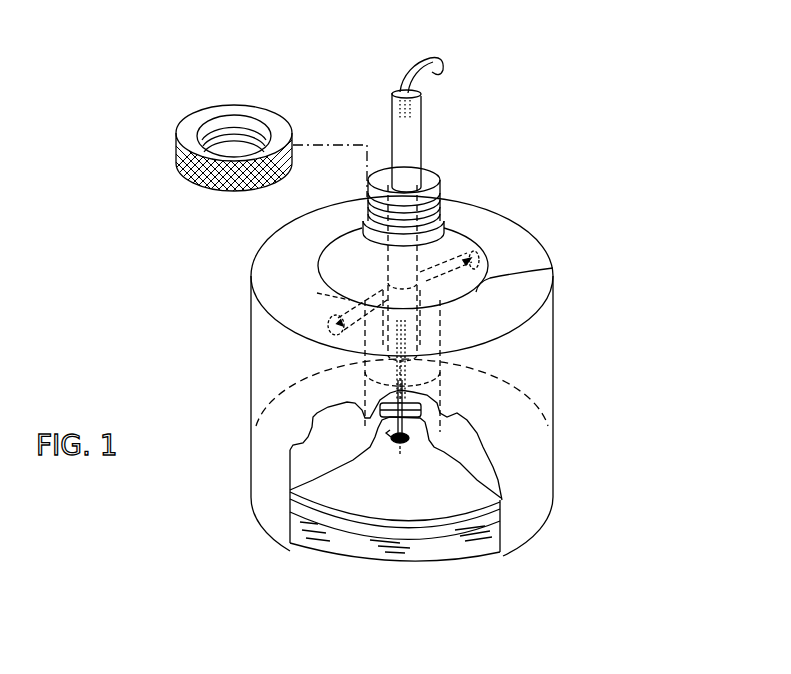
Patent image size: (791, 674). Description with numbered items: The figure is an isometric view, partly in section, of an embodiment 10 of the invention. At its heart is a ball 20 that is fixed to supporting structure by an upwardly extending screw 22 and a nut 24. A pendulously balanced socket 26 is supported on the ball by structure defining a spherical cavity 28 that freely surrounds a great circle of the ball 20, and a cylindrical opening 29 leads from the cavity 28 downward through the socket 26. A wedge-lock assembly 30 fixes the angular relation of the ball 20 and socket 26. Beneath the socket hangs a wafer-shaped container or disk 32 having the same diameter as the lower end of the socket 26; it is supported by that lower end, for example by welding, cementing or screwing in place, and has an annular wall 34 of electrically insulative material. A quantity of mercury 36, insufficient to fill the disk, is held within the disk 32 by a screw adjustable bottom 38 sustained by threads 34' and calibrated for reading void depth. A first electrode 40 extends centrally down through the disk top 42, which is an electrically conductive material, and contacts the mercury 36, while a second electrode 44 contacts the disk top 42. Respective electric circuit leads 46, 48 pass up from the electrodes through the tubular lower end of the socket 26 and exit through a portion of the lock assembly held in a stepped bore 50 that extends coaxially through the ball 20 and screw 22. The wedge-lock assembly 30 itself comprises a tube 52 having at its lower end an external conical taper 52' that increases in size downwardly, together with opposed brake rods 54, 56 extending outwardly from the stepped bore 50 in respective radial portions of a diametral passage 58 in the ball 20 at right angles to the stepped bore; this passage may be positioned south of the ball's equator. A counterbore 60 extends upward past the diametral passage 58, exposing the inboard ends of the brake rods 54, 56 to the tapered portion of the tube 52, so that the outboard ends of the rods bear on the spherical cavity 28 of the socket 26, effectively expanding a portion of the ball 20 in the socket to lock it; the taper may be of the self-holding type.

The embodiment 10 is at (550, 55).
The ball 20 is at (463, 237).
The screw 22 is at (442, 185).
The nut 24 is at (212, 108).
The socket 26 is at (498, 250).
The spherical cavity 28 is at (553, 267).
The cylindrical opening 29 is at (480, 367).
The wedge-lock assembly 30 is at (365, 271).
The disk 32 is at (278, 475).
The annular wall 34 is at (329, 506).
The threads 34' is at (329, 522).
The mercury 36 is at (303, 544).
The screw adjustable bottom 38 is at (325, 550).
The first electrode 40 is at (410, 456).
The disk top 42 is at (380, 510).
The second electrode 44 is at (392, 445).
The electric circuit lead 46 is at (433, 55).
The electric circuit lead 48 is at (440, 74).
The stepped bore 50 is at (388, 255).
The tube 52 is at (524, 141).
The external conical taper 52' is at (529, 349).
The brake rod 54 is at (317, 293).
The brake rod 56 is at (462, 310).
The diametral passage 58 is at (328, 320).
The counterbore 60 is at (385, 343).